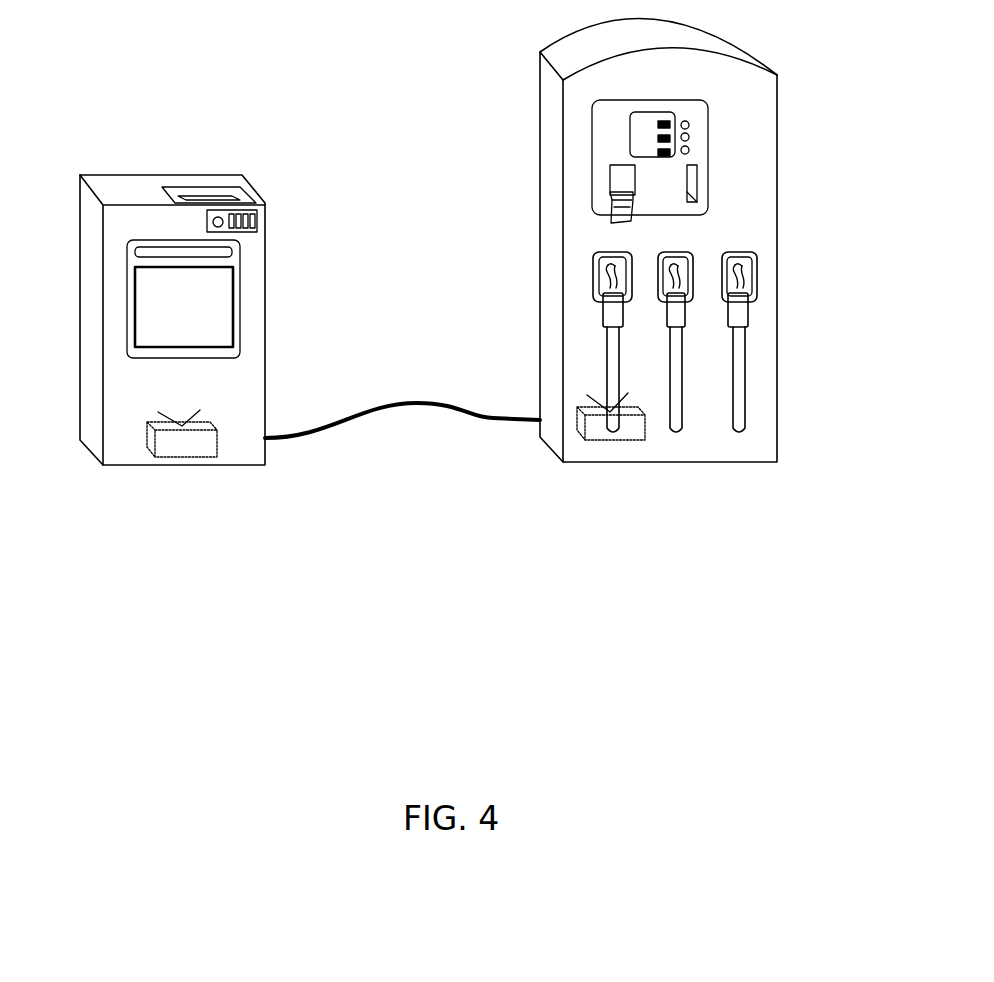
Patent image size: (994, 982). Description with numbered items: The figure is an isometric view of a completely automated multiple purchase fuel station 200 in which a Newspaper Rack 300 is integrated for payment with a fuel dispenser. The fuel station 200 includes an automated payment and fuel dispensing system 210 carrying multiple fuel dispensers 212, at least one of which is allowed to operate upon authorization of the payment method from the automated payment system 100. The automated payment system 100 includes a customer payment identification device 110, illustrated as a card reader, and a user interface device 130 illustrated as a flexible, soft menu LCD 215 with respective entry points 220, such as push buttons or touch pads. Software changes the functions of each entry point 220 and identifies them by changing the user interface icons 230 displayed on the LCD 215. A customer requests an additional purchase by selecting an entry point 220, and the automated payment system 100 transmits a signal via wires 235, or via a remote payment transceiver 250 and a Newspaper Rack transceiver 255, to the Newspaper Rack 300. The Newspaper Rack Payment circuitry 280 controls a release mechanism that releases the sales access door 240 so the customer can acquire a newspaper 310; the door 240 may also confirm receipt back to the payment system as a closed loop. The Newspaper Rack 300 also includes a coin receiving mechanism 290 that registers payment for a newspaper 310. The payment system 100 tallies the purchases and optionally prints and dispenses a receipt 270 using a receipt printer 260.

The automated payment system 100 is at (613, 137).
The customer payment identification device 110 is at (712, 167).
The user interface device 130 is at (620, 120).
The automated multiple purchase fuel station 200 is at (671, 240).
The automated payment and fuel dispensing system 210 is at (757, 190).
The fuel dispensers 212 is at (738, 307).
The flexible, soft menu LCD 215 is at (650, 120).
The entry points 220 is at (690, 150).
The user interface icons 230 is at (678, 127).
The wires 235 is at (478, 415).
The sales access door 240 is at (237, 255).
The remote payment transceiver 250 is at (597, 427).
The Newspaper Rack transceiver 255 is at (188, 445).
The receipt printer 260 is at (617, 177).
The receipt 270 is at (617, 207).
The Newspaper Rack Payment circuitry 280 is at (193, 192).
The coin receiving mechanism 290 is at (252, 223).
The Newspaper Rack 300 is at (66, 468).
The newspaper 310 is at (220, 328).